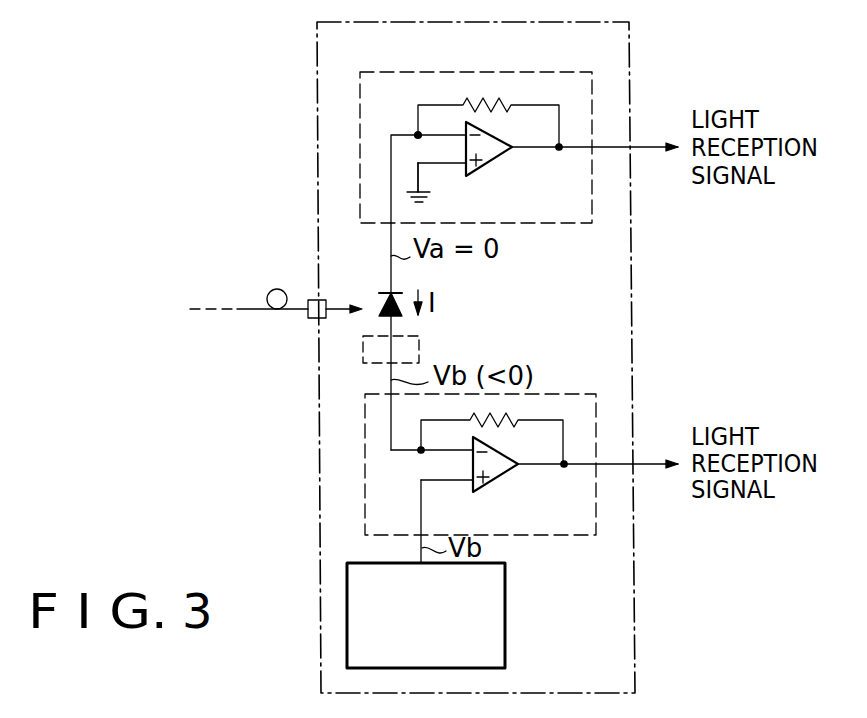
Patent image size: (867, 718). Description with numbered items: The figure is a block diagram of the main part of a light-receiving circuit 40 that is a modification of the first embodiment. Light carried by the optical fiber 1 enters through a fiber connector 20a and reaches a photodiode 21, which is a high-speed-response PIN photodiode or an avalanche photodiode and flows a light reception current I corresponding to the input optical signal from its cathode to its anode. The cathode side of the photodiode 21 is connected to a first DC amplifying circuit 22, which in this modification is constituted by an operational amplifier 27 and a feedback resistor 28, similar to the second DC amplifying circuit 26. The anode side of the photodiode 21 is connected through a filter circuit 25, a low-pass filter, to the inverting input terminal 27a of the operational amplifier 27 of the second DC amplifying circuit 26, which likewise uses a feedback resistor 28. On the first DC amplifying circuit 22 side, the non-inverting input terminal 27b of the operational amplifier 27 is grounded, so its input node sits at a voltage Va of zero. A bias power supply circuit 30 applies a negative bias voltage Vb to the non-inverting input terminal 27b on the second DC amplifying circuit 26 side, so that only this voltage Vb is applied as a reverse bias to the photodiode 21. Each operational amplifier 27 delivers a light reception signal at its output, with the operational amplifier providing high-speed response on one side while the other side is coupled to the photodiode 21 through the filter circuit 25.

The optical fiber 1 is at (250, 308).
The fiber connector 20a is at (306, 298).
The photodiode 21 is at (382, 292).
The first DC amplifying circuit 22 is at (421, 71).
The filter circuit 25 is at (419, 350).
The second DC amplifying circuit 26 is at (570, 392).
The operational amplifier 27 is at (512, 160).
The inverting input terminal 27a is at (400, 132).
The non-inverting input terminal 27b is at (440, 165).
The feedback resistor 28 is at (509, 91).
The bias power supply circuit 30 is at (505, 620).
The light-receiving circuit 40 is at (630, 84).